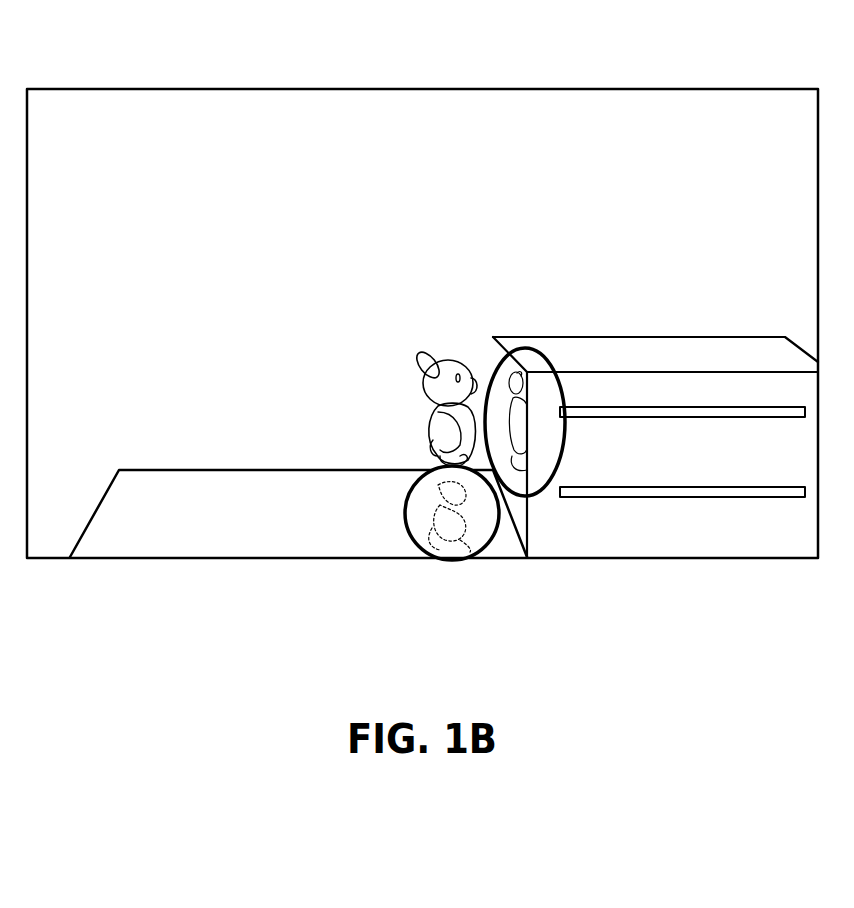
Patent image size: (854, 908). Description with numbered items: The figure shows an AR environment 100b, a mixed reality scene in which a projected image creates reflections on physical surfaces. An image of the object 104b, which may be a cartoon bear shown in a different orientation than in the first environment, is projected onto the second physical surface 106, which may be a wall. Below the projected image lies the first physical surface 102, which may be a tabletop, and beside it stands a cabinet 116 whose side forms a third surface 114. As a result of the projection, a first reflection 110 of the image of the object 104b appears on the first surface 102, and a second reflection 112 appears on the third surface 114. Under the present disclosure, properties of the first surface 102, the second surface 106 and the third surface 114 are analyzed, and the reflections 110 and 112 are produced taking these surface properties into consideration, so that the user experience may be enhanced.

The AR environment 100b is at (422, 288).
The first physical surface 102 is at (202, 528).
The image of the object 104b is at (450, 362).
The second physical surface 106 is at (270, 128).
The first reflection 110 is at (403, 520).
The second reflection 112 is at (570, 463).
The third surface 114 is at (493, 340).
The cabinet 116 is at (708, 343).